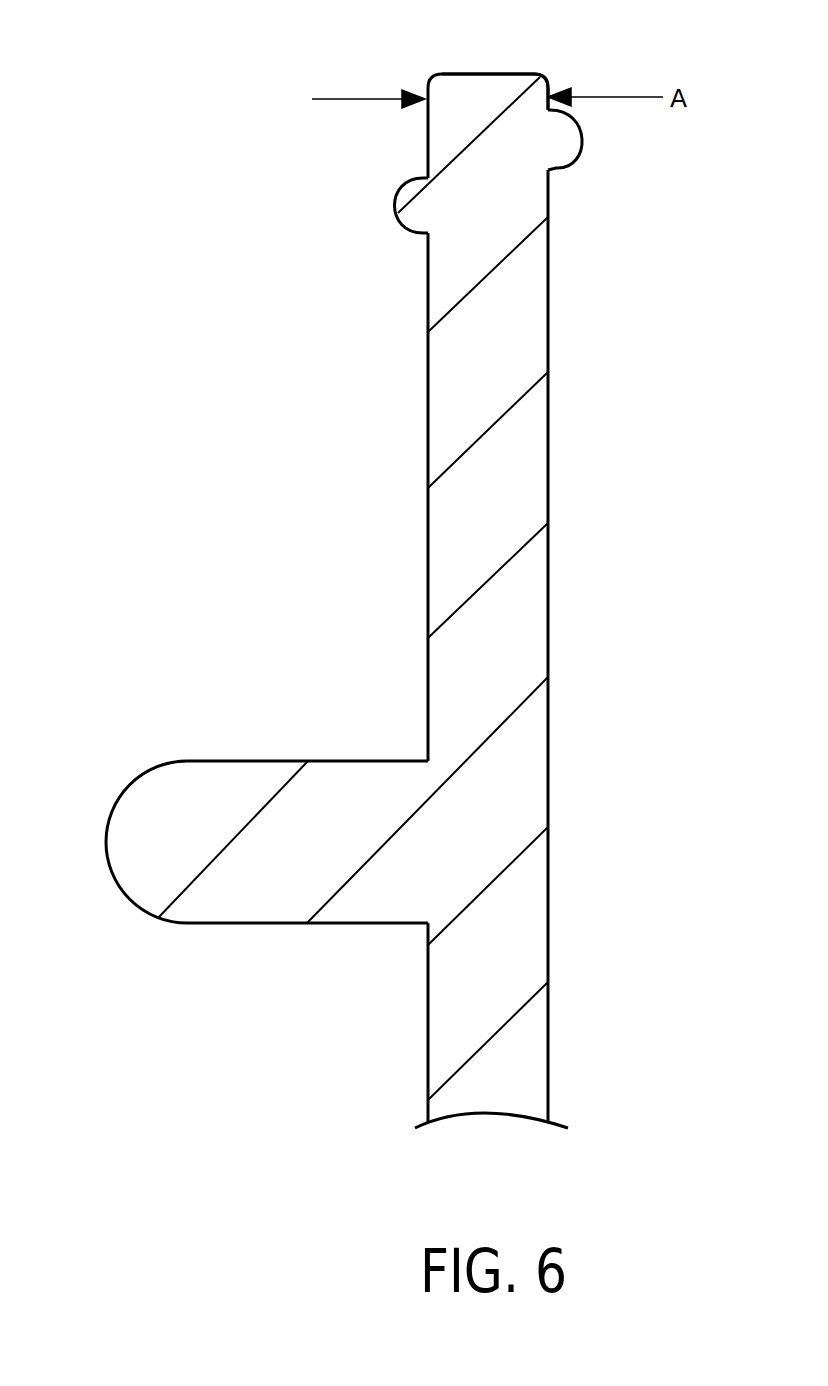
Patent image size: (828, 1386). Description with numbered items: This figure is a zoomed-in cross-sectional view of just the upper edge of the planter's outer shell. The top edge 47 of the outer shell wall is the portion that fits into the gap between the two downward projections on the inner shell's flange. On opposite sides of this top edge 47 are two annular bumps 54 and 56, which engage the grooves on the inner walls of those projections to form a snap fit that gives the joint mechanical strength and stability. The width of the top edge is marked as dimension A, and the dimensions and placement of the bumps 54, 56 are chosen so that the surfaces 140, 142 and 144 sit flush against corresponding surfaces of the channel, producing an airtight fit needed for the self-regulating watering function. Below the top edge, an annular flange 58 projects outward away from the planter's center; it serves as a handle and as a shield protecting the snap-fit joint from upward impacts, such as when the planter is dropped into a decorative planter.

The top edge of the outer shell 47 is at (548, 632).
The annular bump 54 is at (403, 187).
The annular bump 56 is at (568, 168).
The annular flange 58 is at (130, 912).
The surface 140 is at (425, 128).
The surface 142 is at (485, 73).
The surface 144 is at (545, 75).